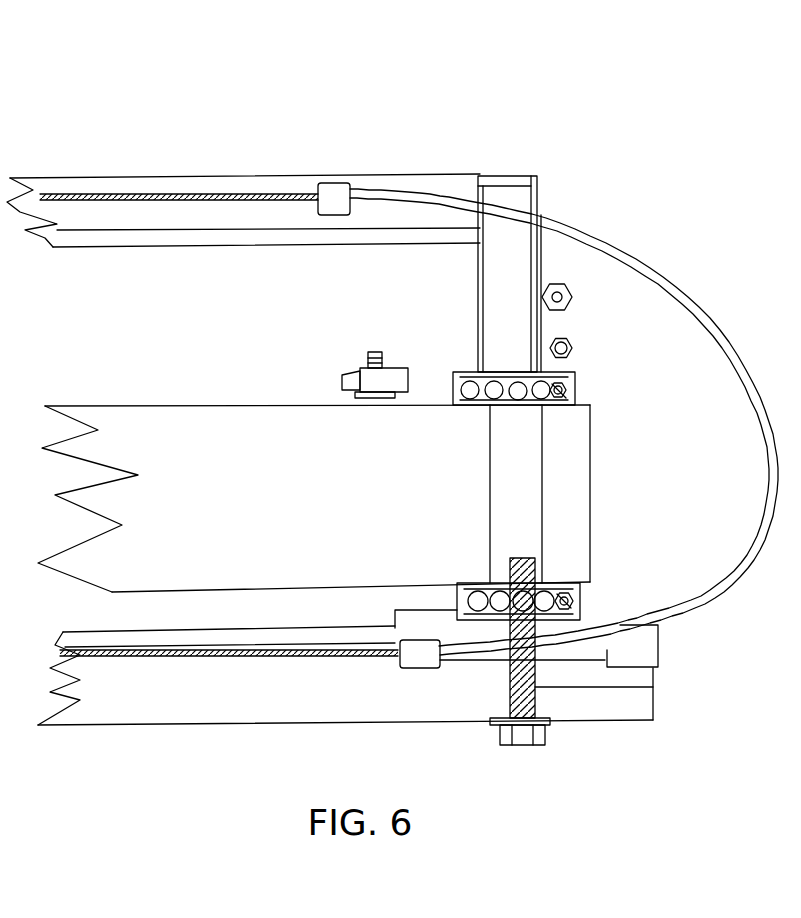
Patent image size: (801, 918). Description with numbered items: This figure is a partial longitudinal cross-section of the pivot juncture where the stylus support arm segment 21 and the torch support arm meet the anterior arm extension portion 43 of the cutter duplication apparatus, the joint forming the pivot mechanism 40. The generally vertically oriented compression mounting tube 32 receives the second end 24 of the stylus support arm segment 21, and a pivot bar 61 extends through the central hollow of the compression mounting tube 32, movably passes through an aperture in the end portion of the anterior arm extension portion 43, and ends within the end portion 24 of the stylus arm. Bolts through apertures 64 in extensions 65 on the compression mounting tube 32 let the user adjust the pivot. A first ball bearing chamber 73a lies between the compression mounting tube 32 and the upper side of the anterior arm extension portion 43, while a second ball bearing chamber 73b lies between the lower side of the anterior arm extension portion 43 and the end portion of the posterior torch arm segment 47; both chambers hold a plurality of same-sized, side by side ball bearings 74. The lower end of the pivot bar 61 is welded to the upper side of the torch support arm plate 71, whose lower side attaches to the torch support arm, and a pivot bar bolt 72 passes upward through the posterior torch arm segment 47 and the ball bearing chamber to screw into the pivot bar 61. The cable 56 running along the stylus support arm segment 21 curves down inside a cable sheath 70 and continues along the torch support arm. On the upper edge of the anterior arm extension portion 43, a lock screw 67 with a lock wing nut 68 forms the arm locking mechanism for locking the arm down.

The stylus support arm segment 21 is at (172, 236).
The second end of the stylus support arm segment 24 is at (415, 186).
The cable 56 is at (228, 196).
The pivot bar 61 is at (513, 196).
The compression mounting tube 32 is at (544, 265).
The cable sheath 70 is at (633, 250).
The pivot mechanism 40 is at (680, 352).
The extensions 65 is at (574, 297).
The apertures 64 is at (569, 349).
The first ball bearing chamber 73a is at (577, 392).
The second ball bearing chamber 73b is at (583, 592).
The ball bearings 74 is at (545, 408).
The lock screw 67 is at (372, 356).
The lock wing nut 68 is at (344, 380).
The anterior arm extension portion 43 is at (232, 526).
The posterior torch arm segment 47 is at (224, 706).
The torch support arm plate 71 is at (638, 642).
The pivot bar bolt 72 is at (657, 687).